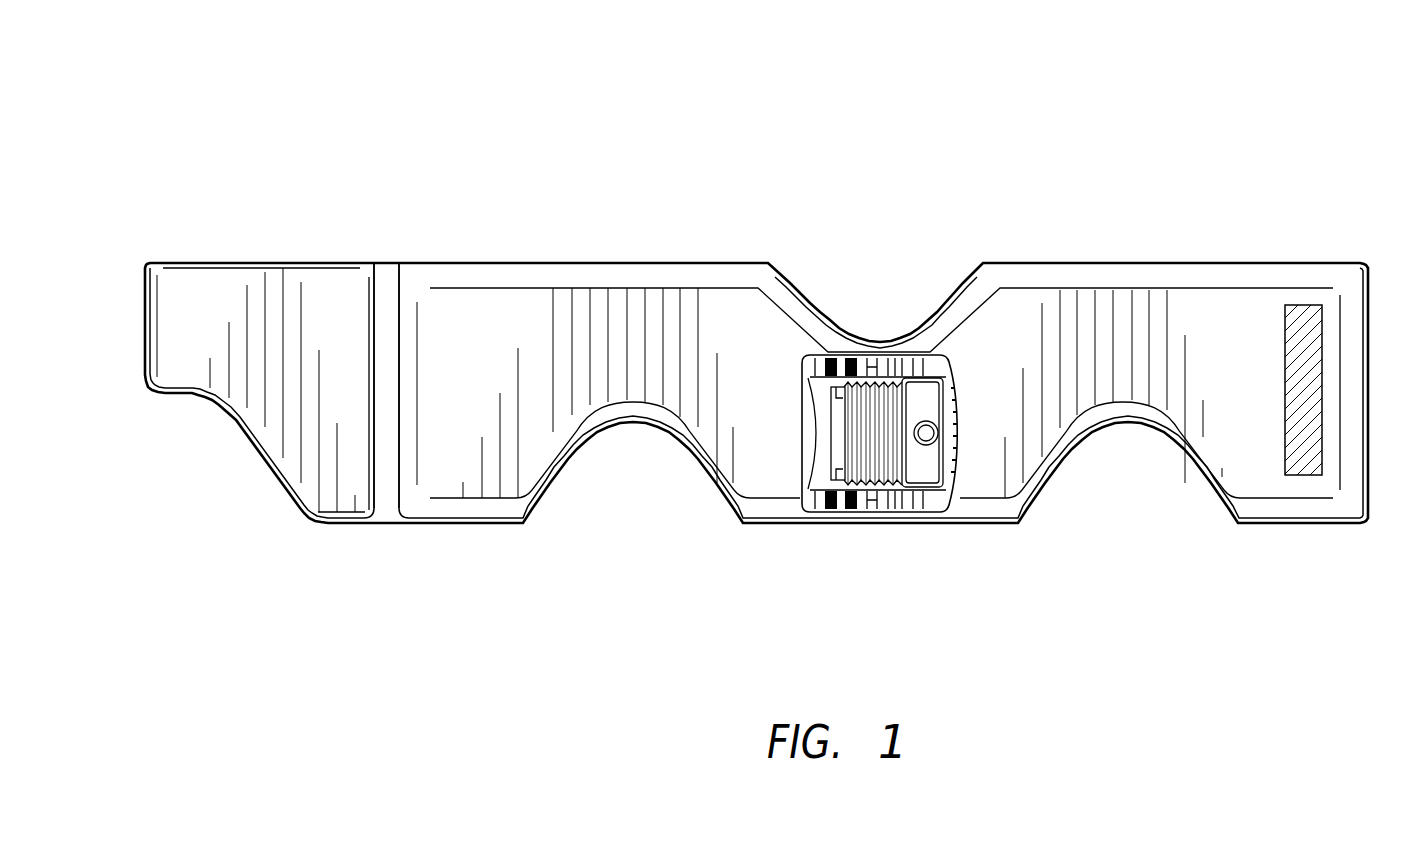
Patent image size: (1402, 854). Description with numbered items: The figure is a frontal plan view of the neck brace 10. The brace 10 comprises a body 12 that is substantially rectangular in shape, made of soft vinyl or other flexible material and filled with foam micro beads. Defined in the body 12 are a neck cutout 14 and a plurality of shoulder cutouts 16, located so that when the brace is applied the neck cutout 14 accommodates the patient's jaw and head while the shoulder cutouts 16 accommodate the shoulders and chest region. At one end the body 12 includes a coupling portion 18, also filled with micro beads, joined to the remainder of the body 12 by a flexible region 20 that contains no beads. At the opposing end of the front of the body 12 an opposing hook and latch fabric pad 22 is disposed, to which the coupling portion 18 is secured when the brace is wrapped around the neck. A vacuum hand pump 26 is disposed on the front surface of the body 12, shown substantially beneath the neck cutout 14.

The neck brace 10 is at (1218, 245).
The body 12 is at (532, 347).
The neck cutout 14 is at (927, 305).
The shoulder cutouts 16 is at (580, 446).
The coupling portion 18 is at (205, 315).
The flexible region 20 is at (387, 280).
The hook and latch fabric pad 22 is at (1305, 448).
The vacuum hand pump 26 is at (930, 510).